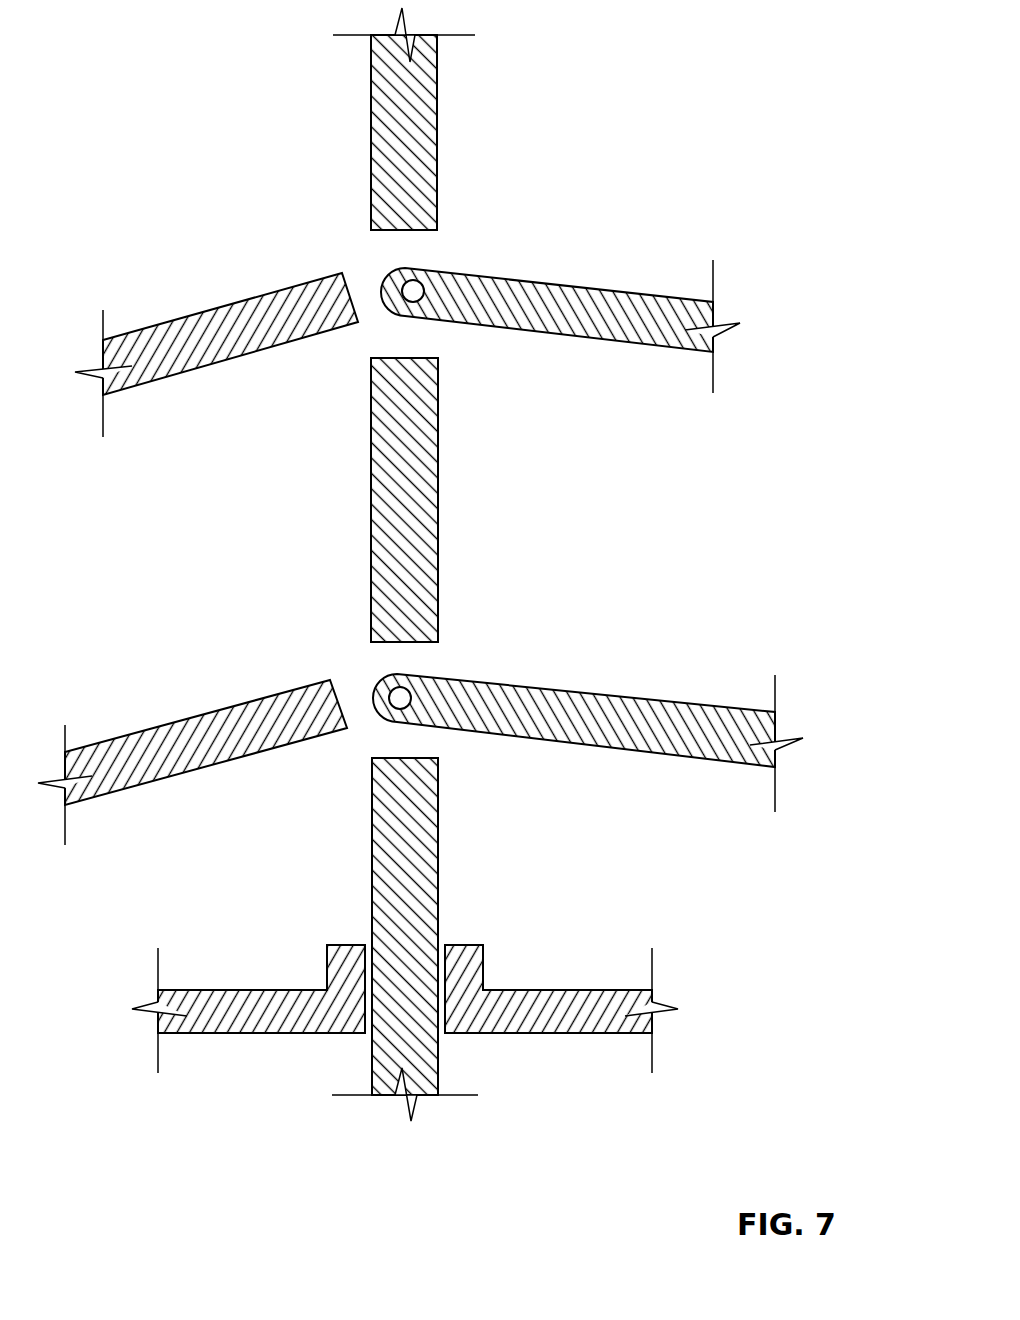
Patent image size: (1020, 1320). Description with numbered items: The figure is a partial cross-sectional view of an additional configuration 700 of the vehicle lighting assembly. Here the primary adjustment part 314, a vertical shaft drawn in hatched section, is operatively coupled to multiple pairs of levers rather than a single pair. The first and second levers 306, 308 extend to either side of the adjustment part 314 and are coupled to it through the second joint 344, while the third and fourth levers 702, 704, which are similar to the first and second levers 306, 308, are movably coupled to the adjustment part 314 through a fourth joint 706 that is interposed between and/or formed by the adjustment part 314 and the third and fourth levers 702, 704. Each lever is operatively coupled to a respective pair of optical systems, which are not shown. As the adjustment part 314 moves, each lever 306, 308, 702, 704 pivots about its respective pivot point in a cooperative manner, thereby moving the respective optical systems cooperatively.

The additional configuration 700 is at (98, 80).
The third lever 702 is at (225, 306).
The fourth lever 704 is at (570, 286).
The fourth joint 706 is at (333, 245).
The primary adjustment part 314 is at (438, 495).
The second joint 344 is at (306, 645).
The first lever 306 is at (218, 710).
The second lever 308 is at (628, 697).